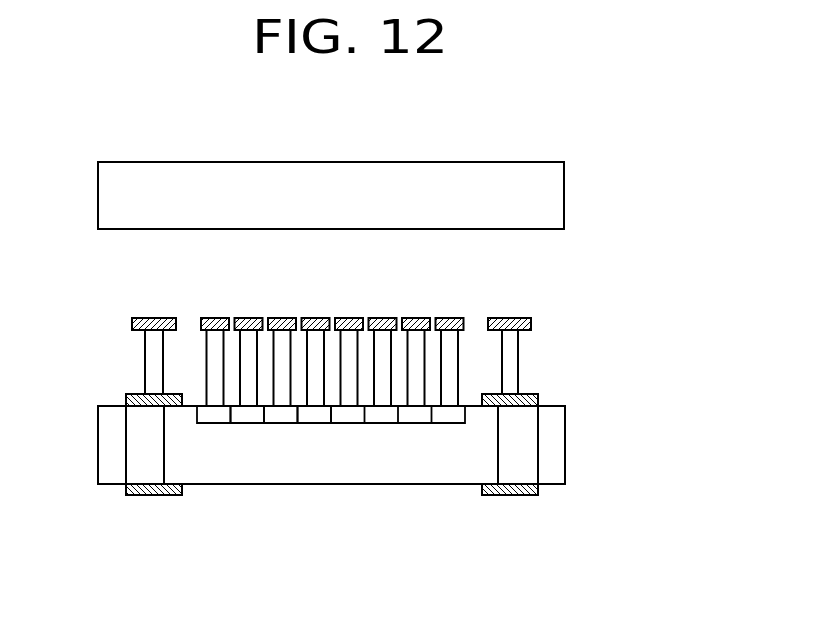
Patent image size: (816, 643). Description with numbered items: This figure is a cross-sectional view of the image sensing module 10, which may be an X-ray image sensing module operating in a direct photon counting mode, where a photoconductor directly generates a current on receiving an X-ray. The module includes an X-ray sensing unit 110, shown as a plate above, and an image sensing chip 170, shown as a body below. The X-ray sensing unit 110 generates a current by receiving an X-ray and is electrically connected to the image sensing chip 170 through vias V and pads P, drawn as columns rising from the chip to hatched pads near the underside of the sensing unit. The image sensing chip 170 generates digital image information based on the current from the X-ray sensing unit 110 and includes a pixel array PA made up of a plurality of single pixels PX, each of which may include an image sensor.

The image sensing module 10 is at (576, 134).
The X-ray sensing unit 110 is at (553, 202).
The image sensing chip 170 is at (560, 441).
The pad P is at (531, 324).
The via V is at (513, 357).
The single pixel PX is at (248, 415).
The pixel array PA is at (322, 541).